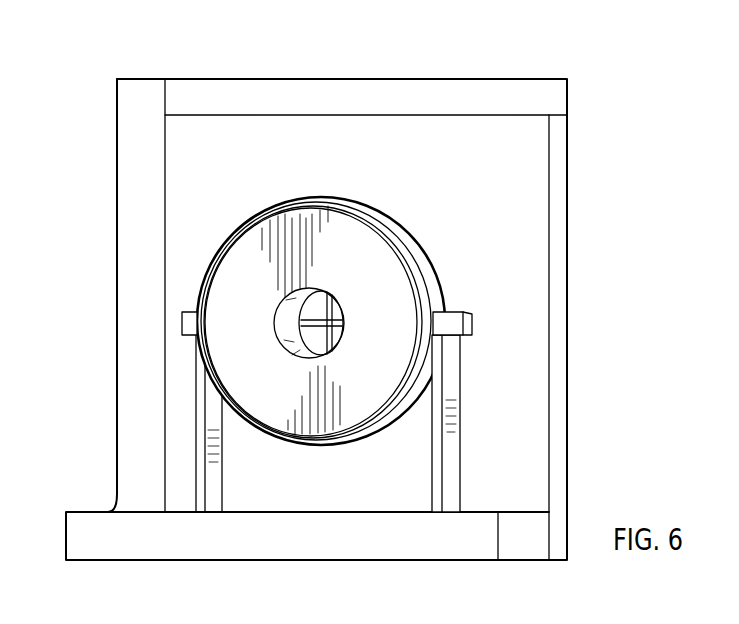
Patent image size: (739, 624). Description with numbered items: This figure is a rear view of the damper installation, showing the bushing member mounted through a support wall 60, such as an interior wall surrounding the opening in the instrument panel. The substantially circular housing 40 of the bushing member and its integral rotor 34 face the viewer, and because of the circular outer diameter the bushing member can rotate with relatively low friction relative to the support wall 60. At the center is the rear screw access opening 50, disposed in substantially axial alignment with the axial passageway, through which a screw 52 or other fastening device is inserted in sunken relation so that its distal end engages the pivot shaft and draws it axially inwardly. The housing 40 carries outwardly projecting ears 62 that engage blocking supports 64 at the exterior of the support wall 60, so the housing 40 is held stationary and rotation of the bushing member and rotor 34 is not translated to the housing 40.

The rotor 34 is at (230, 296).
The housing 40 is at (432, 272).
The rear screw access opening 50 is at (282, 336).
The screw 52 is at (316, 305).
The support wall 60 is at (465, 150).
The outwardly projecting ears 62 is at (182, 323).
The blocking supports 64 is at (195, 452).